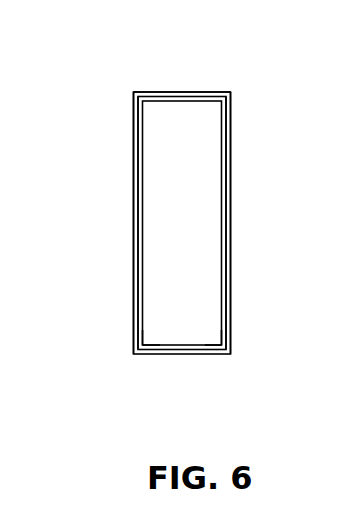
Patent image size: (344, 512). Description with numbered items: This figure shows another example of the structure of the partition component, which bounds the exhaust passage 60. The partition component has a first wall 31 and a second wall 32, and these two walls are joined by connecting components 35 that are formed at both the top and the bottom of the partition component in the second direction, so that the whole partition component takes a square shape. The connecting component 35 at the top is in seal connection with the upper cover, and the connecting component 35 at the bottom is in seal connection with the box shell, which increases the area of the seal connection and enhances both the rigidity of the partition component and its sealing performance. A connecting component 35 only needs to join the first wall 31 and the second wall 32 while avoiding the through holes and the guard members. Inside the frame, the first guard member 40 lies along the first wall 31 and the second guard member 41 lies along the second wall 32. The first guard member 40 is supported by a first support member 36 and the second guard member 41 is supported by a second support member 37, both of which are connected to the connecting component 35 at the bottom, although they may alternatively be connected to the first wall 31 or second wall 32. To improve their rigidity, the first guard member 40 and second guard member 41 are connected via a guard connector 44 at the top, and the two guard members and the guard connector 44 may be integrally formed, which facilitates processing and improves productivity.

The first wall 31 is at (137, 182).
The second wall 32 is at (228, 175).
The connecting component 35 is at (178, 95).
The first support member 36 is at (147, 342).
The second support member 37 is at (223, 342).
The first guard member 40 is at (139, 240).
The second guard member 41 is at (227, 233).
The guard connector 44 is at (153, 102).
The exhaust passage 60 is at (195, 222).